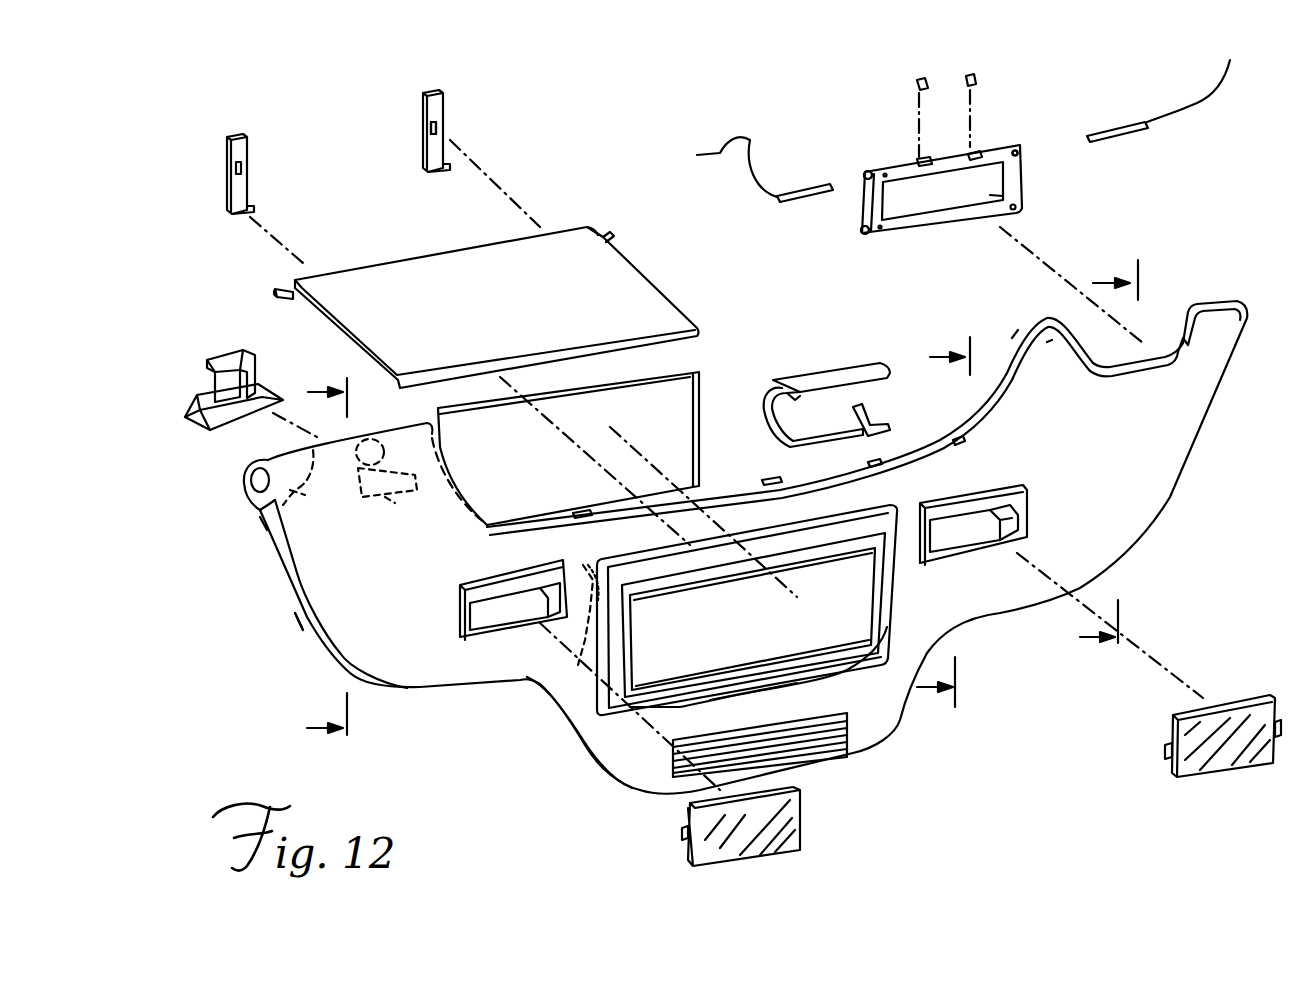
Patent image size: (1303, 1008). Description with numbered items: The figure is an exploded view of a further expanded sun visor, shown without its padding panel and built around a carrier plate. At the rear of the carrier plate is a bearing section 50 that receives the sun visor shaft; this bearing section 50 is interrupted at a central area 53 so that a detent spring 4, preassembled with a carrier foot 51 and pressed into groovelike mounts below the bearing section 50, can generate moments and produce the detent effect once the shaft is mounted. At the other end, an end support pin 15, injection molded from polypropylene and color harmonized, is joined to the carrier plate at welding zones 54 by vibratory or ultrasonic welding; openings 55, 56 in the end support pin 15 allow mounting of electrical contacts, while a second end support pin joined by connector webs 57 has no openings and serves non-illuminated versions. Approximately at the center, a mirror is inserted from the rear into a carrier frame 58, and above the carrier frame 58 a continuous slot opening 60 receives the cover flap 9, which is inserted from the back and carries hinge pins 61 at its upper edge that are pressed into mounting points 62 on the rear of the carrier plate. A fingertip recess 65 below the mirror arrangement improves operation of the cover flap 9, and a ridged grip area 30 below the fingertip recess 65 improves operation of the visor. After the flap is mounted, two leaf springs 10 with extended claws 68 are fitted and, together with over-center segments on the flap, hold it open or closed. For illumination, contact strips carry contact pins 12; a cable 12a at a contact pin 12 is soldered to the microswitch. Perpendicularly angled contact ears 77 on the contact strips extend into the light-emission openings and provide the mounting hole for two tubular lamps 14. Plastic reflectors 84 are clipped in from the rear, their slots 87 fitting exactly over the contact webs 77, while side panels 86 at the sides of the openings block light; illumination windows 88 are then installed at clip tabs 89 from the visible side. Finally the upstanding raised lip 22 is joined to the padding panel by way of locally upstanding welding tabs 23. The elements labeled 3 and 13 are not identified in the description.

The visor body 3 is at (1200, 413).
The detent spring 4 is at (212, 362).
The cover flap 9 is at (653, 290).
The leaf springs 10 is at (443, 100).
The contact pin 12 is at (823, 182).
The cable 12a is at (747, 145).
The screw 13 is at (917, 78).
The tubular lamps 14 is at (495, 640).
The end support pin 15 is at (975, 152).
The upstanding raised lip 22 is at (330, 663).
The welding tabs 23 is at (297, 623).
The ridged grip area 30 is at (828, 740).
The bearing section 50 is at (246, 500).
The carrier foot 51 is at (192, 428).
The central area 53 is at (337, 507).
The welding zones 54 is at (1023, 160).
The opening 55 is at (920, 160).
The opening 56 is at (867, 178).
The connector webs 57 is at (997, 190).
The carrier frame 58 is at (883, 627).
The slot opening 60 is at (765, 530).
The hinge pins 61 is at (612, 232).
The mounting points 62 is at (560, 718).
The fingertip recess 65 is at (820, 687).
The claws 68 is at (438, 128).
The contact ears 77 is at (1023, 533).
The plastic reflectors 84 is at (812, 380).
The side panels 86 is at (1030, 483).
The slots 87 is at (873, 423).
The illumination windows 88 is at (685, 845).
The clip tabs 89 is at (1168, 768).